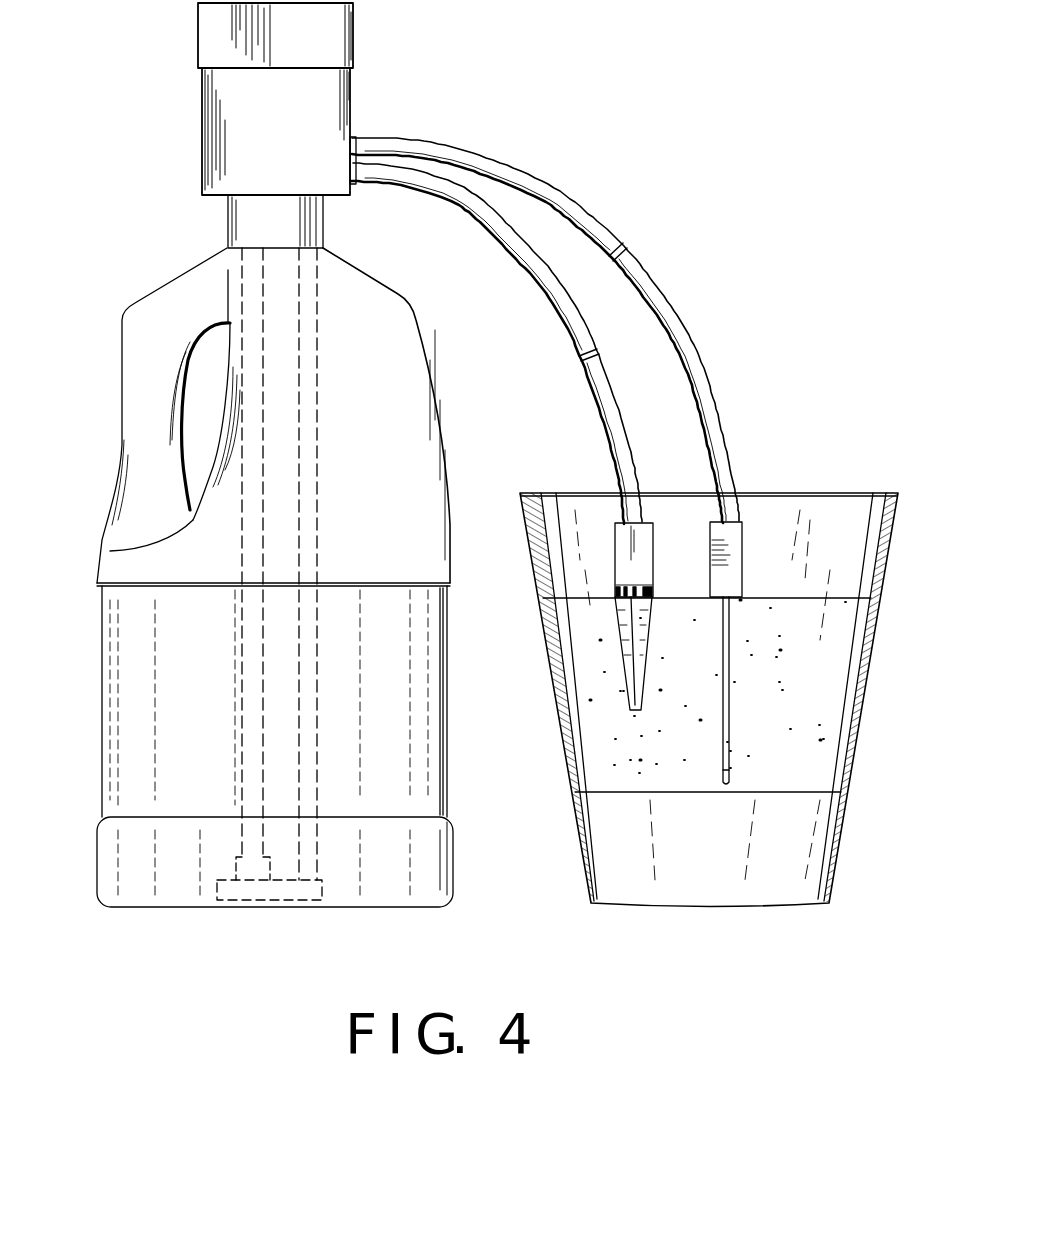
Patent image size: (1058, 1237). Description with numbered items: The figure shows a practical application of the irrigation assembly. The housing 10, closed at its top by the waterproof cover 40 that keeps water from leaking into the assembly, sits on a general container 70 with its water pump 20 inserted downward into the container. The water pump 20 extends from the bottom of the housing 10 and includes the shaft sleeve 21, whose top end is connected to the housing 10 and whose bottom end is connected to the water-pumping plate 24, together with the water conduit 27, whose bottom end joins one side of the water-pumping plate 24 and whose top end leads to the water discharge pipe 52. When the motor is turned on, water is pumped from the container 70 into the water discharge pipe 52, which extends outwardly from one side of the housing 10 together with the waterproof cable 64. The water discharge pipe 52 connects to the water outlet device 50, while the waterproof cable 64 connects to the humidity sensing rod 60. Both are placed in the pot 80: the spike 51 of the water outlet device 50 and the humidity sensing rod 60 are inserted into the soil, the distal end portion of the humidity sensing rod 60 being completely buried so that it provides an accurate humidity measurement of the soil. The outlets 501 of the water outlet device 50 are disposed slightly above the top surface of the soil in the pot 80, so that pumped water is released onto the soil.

The housing 10 is at (215, 118).
The waterproof cover 40 is at (345, 31).
The container 70 is at (118, 626).
The water pump 20 is at (218, 603).
The shaft sleeve 21 is at (242, 665).
The water conduit 27 is at (312, 500).
The water-pumping plate 24 is at (268, 905).
The water discharge pipe 52 is at (562, 322).
The waterproof cable 64 is at (597, 225).
The water outlet device 50 is at (607, 523).
The outlets 501 is at (650, 582).
The spike 51 is at (623, 646).
The humidity sensing rod 60 is at (723, 626).
The pot 80 is at (868, 689).